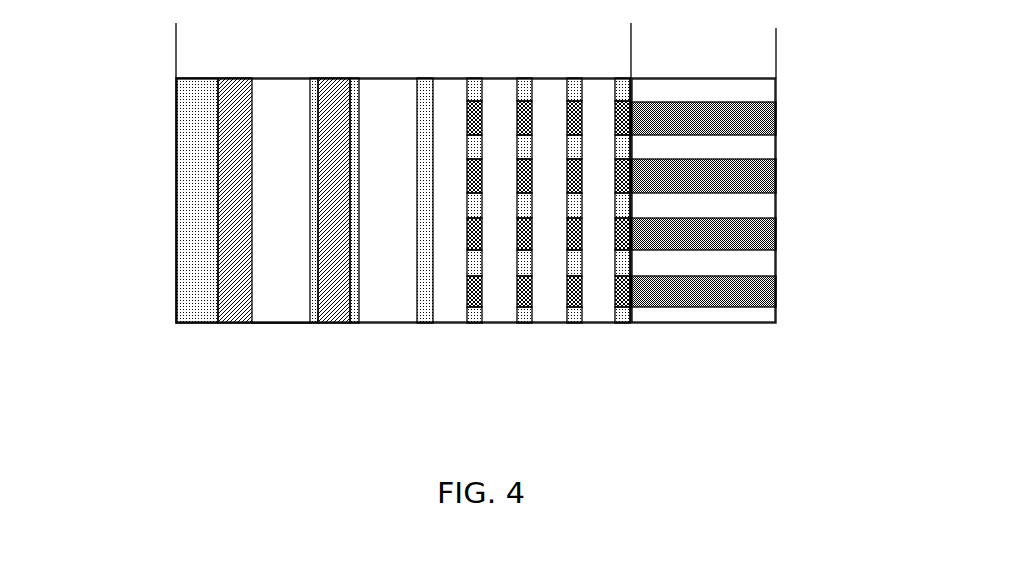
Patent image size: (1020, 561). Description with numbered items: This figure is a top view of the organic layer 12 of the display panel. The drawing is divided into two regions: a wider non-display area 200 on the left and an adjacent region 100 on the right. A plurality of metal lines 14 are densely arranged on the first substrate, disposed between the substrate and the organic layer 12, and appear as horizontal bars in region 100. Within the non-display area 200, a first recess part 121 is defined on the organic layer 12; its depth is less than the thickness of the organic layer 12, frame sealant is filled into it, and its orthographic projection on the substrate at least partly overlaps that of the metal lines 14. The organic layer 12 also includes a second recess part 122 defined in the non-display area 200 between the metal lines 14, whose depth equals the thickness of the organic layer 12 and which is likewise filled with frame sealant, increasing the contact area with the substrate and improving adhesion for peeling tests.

The non-display area 200 is at (617, 53).
The second region 100 is at (762, 53).
The organic layer 12 is at (192, 301).
The second recess part 122 is at (286, 316).
The first recess part 121 is at (443, 316).
The metal lines 14 is at (758, 292).